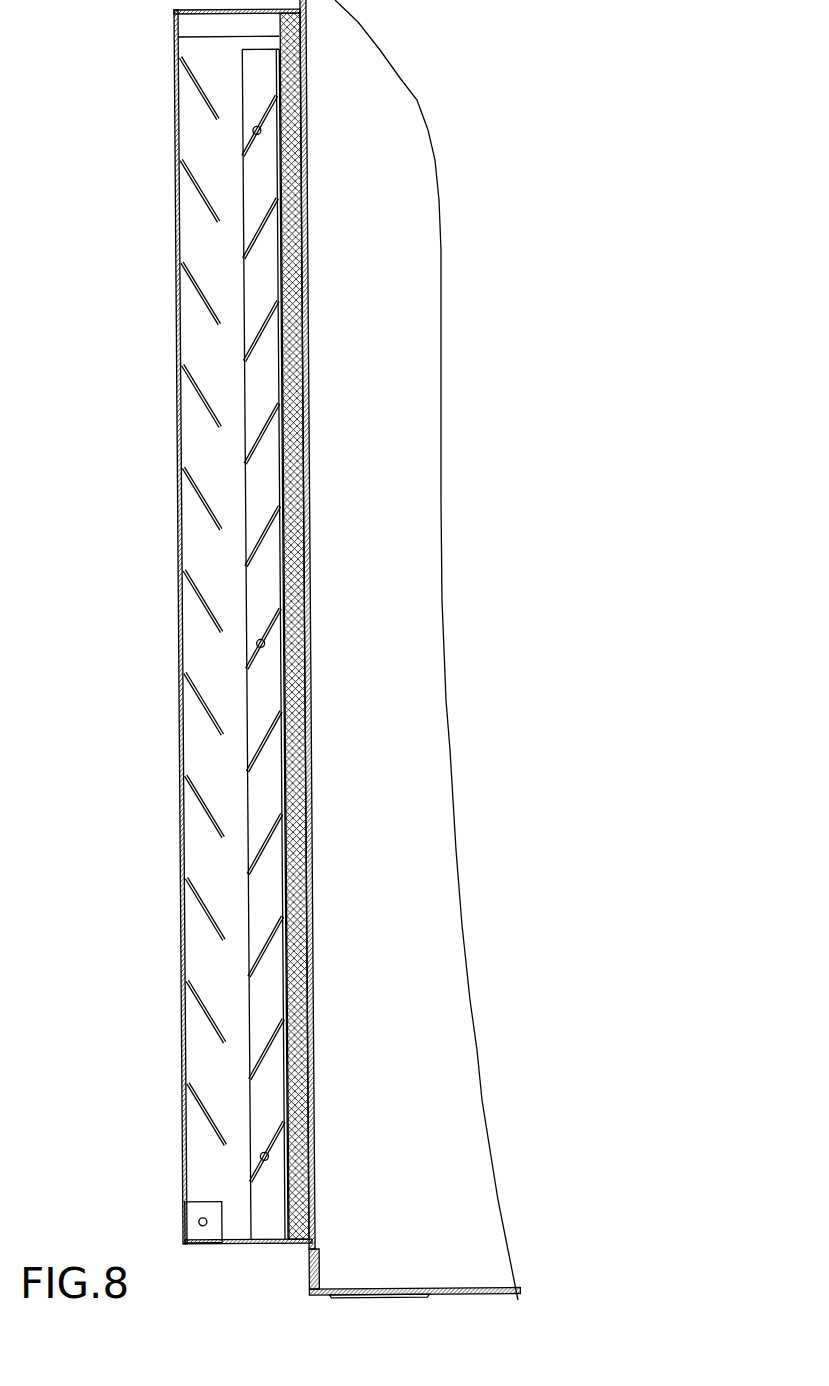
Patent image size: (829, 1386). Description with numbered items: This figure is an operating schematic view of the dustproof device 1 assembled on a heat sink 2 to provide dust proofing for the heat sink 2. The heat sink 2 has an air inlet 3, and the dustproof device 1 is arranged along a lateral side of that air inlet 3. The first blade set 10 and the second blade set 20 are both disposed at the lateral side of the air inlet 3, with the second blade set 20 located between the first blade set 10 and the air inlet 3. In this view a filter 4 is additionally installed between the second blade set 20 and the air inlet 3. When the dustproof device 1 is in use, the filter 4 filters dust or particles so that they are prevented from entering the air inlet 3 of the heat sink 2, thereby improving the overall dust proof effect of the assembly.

The dustproof device 1 is at (154, 568).
The first blade set 10 is at (176, 37).
The filter 4 is at (284, 258).
The heat sink 2 is at (300, 1188).
The second blade set 20 is at (279, 78).
The air inlet 3 is at (306, 328).